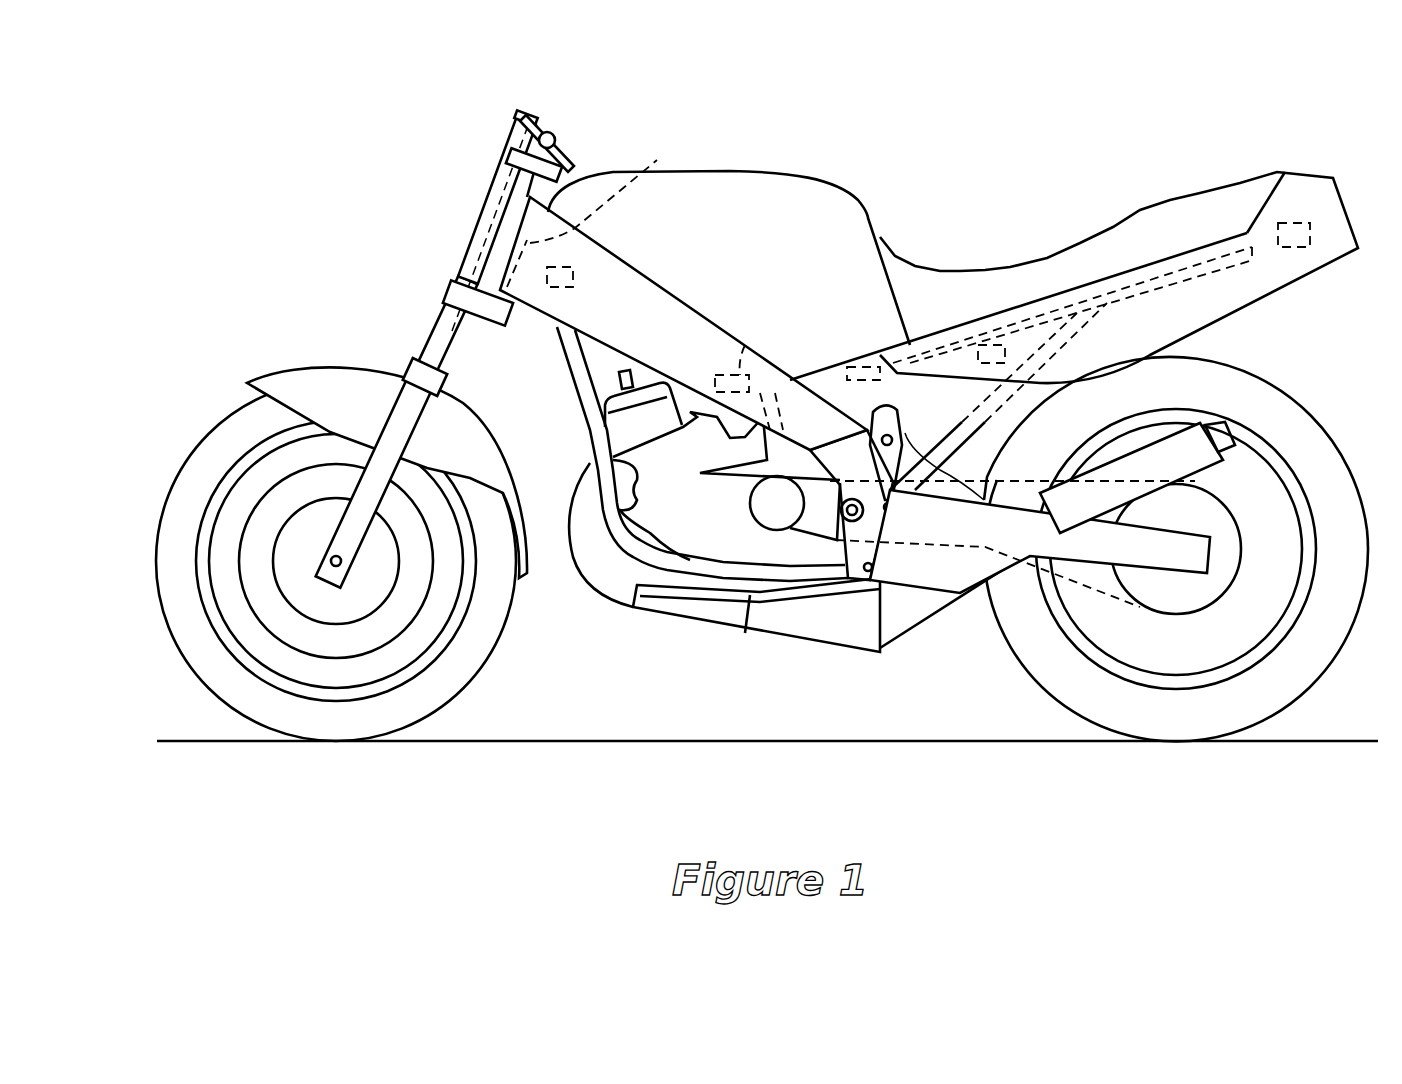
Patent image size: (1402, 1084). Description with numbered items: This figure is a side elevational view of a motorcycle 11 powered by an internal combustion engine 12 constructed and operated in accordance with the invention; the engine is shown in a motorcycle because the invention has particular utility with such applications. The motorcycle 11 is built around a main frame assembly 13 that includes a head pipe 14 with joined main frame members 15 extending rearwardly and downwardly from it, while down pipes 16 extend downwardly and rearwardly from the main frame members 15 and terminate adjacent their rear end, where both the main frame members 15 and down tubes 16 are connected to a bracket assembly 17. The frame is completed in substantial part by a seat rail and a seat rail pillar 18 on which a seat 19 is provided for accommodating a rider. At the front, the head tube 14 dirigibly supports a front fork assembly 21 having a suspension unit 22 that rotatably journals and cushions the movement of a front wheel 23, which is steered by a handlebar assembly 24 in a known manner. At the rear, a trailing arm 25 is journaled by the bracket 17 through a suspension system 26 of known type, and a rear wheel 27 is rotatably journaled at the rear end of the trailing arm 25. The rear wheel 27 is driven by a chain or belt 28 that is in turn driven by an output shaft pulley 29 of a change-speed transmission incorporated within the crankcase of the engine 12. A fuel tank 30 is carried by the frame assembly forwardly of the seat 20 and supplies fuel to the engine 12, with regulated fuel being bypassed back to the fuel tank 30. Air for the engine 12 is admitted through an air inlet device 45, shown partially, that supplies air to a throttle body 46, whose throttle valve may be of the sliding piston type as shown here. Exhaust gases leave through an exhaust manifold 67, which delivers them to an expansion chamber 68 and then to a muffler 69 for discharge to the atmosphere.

The motorcycle 11 is at (1180, 128).
The internal combustion engine 12 is at (652, 527).
The main frame assembly 13 is at (643, 258).
The head pipe 14 is at (625, 190).
The main frame members 15 is at (687, 330).
The down pipes 16 is at (577, 388).
The bracket assembly 17 is at (895, 455).
The seat rail pillar 18 is at (1168, 267).
The seat 19 is at (1093, 323).
The seat 20 is at (972, 268).
The front fork assembly 21 is at (427, 330).
The suspension unit 22 is at (390, 410).
The front wheel 23 is at (423, 700).
The handlebar assembly 24 is at (565, 152).
The trailing arm 25 is at (1060, 603).
The suspension system 26 is at (940, 470).
The rear wheel 27 is at (1217, 707).
The chain or belt 28 is at (1122, 600).
The output shaft pulley 29 is at (770, 505).
The fuel tank 30 is at (777, 190).
The air inlet device 45 is at (835, 350).
The throttle body 46 is at (745, 345).
The exhaust manifold 67 is at (577, 563).
The expansion chamber 68 is at (807, 633).
The muffler 69 is at (1137, 407).